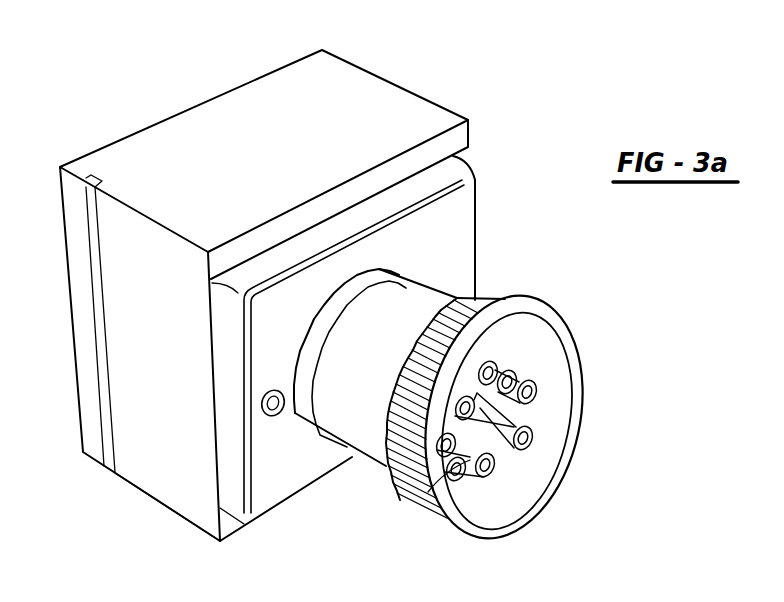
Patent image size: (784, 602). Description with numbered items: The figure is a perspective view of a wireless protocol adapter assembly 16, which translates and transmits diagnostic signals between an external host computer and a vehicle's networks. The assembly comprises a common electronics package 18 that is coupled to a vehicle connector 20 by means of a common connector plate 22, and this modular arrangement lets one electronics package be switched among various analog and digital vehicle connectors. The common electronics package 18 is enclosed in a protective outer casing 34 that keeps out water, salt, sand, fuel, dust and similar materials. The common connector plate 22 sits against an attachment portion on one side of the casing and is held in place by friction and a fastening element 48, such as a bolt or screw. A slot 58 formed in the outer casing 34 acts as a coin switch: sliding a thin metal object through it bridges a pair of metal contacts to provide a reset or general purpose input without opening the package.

The wireless protocol adapter assembly 16 is at (449, 77).
The common electronics package 18 is at (175, 112).
The vehicle connector 20 is at (560, 322).
The common connector plate 22 is at (475, 208).
The protective outer casing 34 is at (173, 517).
The fastening element 48 is at (276, 417).
The slot 58 is at (108, 435).